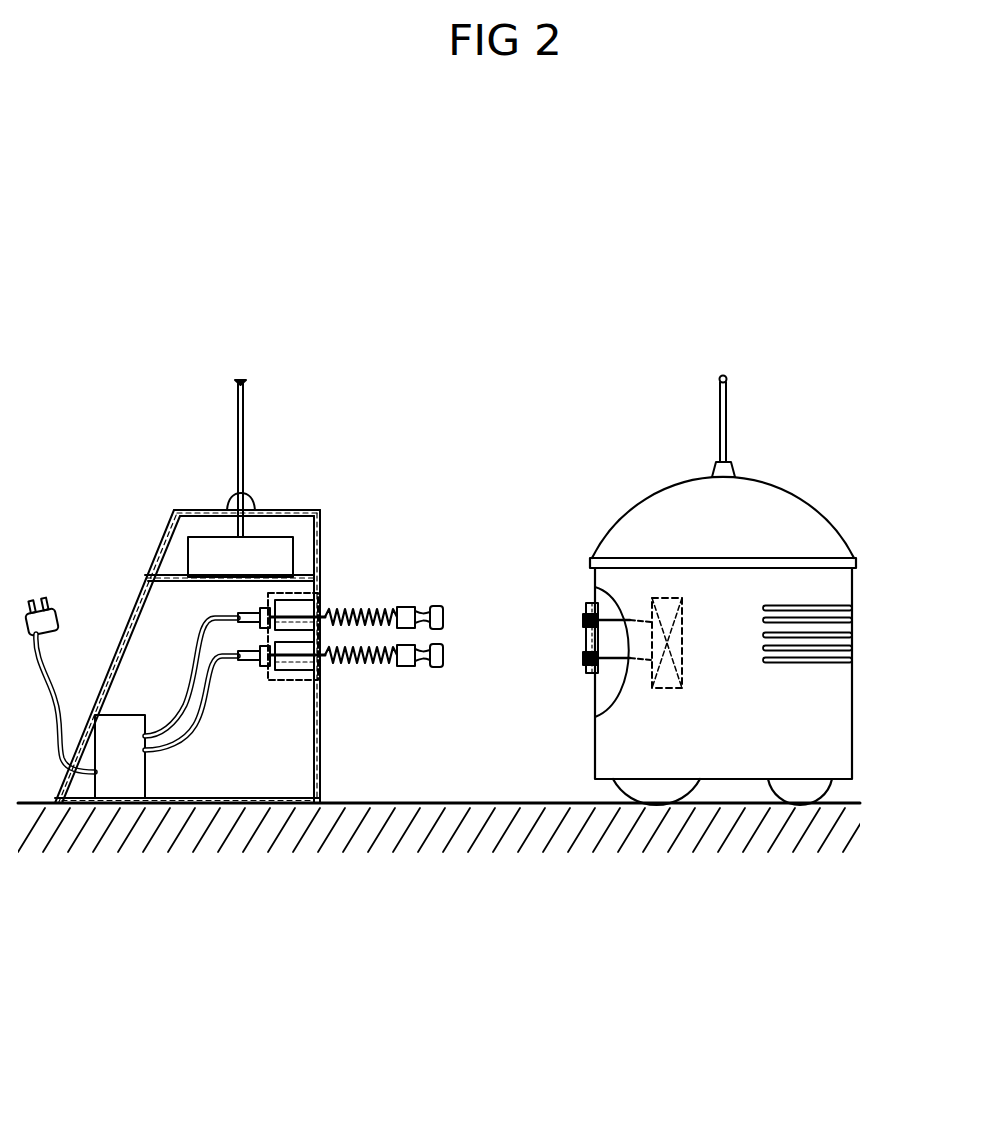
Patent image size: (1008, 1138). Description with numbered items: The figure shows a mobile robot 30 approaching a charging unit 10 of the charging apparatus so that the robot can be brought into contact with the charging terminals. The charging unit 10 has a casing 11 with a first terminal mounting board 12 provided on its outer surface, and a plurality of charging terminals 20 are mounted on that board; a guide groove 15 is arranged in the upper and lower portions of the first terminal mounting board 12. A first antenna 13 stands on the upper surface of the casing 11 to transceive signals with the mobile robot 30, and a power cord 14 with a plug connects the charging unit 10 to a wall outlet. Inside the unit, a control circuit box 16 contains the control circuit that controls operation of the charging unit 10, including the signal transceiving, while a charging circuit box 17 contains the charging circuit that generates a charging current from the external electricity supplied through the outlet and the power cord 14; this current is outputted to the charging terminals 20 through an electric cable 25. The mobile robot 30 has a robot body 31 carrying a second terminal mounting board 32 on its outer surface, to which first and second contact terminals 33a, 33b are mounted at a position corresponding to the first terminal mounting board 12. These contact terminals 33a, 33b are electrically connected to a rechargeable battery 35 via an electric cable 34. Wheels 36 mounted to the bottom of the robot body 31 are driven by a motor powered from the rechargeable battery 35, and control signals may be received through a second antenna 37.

The charging unit 10 is at (158, 430).
The casing 11 is at (320, 758).
The first terminal mounting board 12 is at (327, 598).
The first antenna 13 is at (247, 400).
The power cord 14 is at (40, 662).
The guide groove 15 is at (320, 685).
The control circuit box 16 is at (272, 543).
The charging circuit box 17 is at (127, 773).
The charging terminals 20 is at (425, 585).
The electric cable 25 is at (208, 713).
The mobile robot 30 is at (593, 493).
The robot body 31 is at (793, 508).
The second terminal mounting board 32 is at (585, 673).
The first contact terminal 33a is at (583, 620).
The second contact terminal 33b is at (583, 658).
The electric cable 34 is at (595, 587).
The rechargeable battery 35 is at (682, 650).
The wheels 36 is at (625, 788).
The second antenna 37 is at (723, 417).